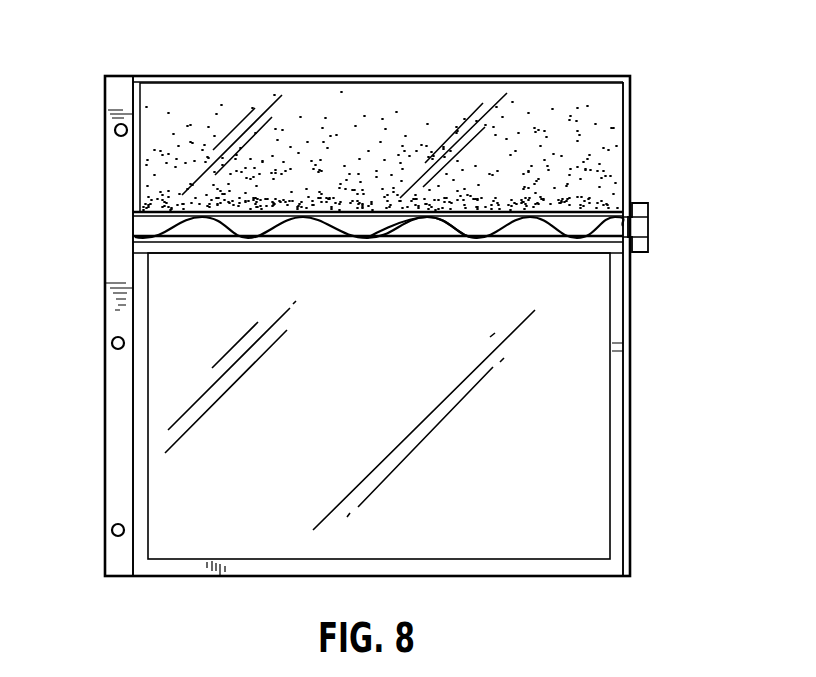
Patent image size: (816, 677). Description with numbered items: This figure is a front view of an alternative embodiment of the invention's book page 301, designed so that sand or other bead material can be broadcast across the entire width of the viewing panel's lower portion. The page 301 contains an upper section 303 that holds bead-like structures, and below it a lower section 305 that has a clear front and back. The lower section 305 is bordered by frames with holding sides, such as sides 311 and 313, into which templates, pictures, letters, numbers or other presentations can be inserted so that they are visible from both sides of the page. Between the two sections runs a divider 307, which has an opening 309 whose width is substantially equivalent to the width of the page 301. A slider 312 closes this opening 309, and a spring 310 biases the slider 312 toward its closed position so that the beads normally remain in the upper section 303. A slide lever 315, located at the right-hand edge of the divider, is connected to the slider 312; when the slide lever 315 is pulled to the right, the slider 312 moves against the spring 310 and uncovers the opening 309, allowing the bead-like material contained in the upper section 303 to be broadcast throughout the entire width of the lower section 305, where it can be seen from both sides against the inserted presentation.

The book page alternative embodiment 301 is at (296, 68).
The upper section 303 is at (443, 118).
The lower section 305 is at (577, 384).
The divider 307 is at (162, 240).
The opening 309 is at (448, 240).
The spring 310 is at (403, 225).
The side 311 is at (626, 318).
The slider 312 is at (323, 227).
The side 313 is at (138, 363).
The slide lever 315 is at (650, 207).